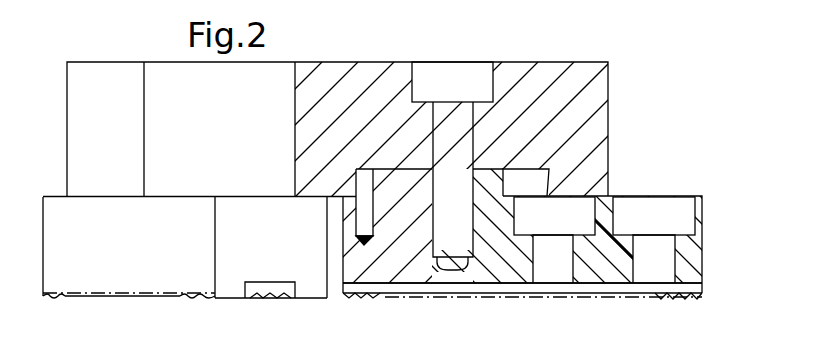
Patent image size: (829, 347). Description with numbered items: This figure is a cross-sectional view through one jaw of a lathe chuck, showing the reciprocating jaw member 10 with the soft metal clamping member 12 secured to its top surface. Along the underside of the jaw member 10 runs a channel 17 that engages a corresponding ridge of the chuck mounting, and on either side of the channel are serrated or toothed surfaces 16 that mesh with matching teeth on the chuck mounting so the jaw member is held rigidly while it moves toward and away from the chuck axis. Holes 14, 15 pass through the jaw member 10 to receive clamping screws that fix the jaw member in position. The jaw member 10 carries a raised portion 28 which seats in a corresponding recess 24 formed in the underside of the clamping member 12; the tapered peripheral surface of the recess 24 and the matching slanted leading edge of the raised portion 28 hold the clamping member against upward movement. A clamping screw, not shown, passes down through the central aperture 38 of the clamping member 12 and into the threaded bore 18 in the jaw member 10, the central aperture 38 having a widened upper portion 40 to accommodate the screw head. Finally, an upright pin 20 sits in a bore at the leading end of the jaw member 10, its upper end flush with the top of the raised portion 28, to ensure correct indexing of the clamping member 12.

The jaw member 10 is at (398, 273).
The clamping member 12 is at (597, 127).
The hole 14 is at (643, 277).
The hole 15 is at (552, 278).
The serrated or toothed surfaces 16 is at (283, 300).
The channel 17 is at (255, 300).
The threaded bore 18 is at (438, 239).
The upright pin 20 is at (345, 272).
The recess 24 is at (537, 178).
The raised portion 28 is at (422, 113).
The central aperture 38 is at (462, 152).
The widened upper portion 40 is at (460, 93).